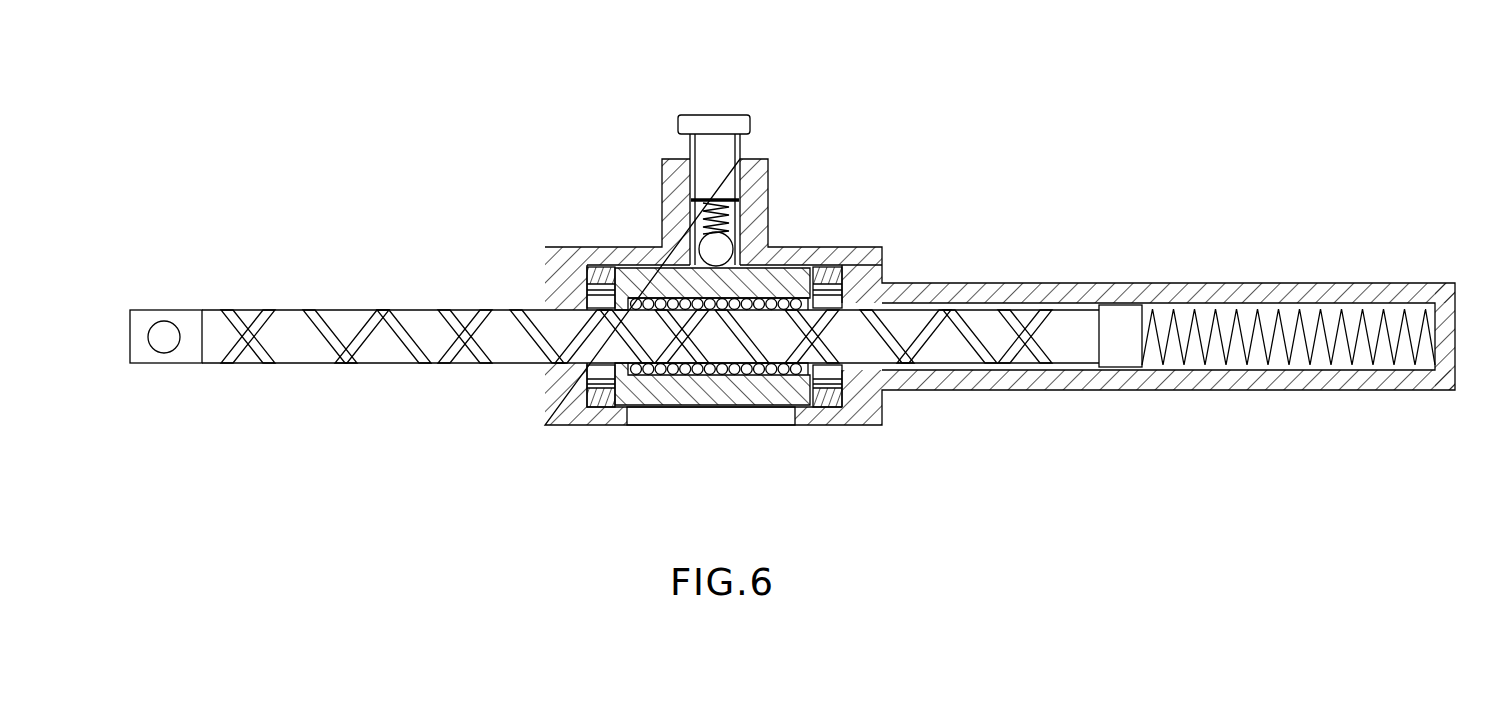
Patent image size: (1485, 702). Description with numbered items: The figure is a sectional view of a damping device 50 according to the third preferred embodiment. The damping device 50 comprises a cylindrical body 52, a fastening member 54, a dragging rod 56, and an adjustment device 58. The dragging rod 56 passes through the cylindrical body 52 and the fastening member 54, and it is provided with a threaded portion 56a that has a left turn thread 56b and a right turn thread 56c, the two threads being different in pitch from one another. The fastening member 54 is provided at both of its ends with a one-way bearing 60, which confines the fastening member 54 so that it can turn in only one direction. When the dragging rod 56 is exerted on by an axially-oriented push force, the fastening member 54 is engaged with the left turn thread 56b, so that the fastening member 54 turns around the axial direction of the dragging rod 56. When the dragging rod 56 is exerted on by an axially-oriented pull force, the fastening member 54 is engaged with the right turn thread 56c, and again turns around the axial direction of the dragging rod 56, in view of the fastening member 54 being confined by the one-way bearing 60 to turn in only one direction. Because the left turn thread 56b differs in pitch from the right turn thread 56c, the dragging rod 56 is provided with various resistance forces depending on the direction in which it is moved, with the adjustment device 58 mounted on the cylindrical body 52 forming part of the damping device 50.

The damping device 50 is at (963, 137).
The cylindrical body 52 is at (880, 242).
The fastening member 54 is at (725, 393).
The dragging rod 56 is at (427, 312).
The threaded portion 56a is at (397, 440).
The left turn thread 56b is at (263, 357).
The right turn thread 56c is at (365, 340).
The adjustment device 58 is at (747, 150).
The one-way bearing 60 is at (598, 397).